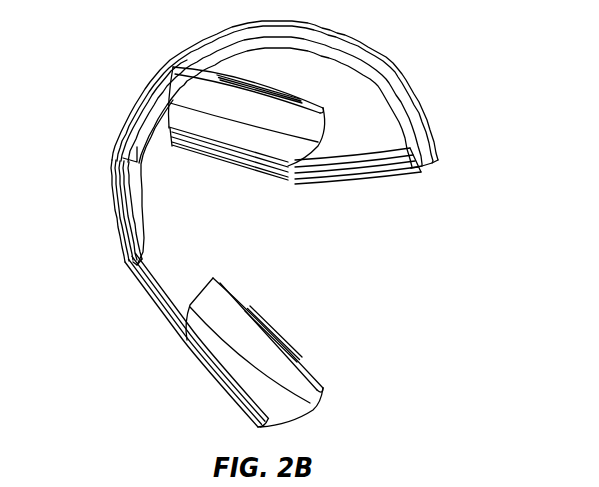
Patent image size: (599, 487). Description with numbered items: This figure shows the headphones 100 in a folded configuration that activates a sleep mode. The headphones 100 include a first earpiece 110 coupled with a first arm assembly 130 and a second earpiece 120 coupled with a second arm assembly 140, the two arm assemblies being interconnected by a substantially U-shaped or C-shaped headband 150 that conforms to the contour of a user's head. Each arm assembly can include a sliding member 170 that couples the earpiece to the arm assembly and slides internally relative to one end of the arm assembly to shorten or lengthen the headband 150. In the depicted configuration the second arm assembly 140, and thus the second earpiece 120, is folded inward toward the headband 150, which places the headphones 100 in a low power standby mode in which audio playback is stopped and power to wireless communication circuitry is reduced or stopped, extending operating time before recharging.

The headphones 100 is at (470, 102).
The first earpiece 110 is at (210, 390).
The second earpiece 120 is at (227, 143).
The first arm assembly 130 is at (125, 222).
The second arm assembly 140 is at (371, 176).
The headband 150 is at (138, 122).
The sliding member 170 is at (148, 302).